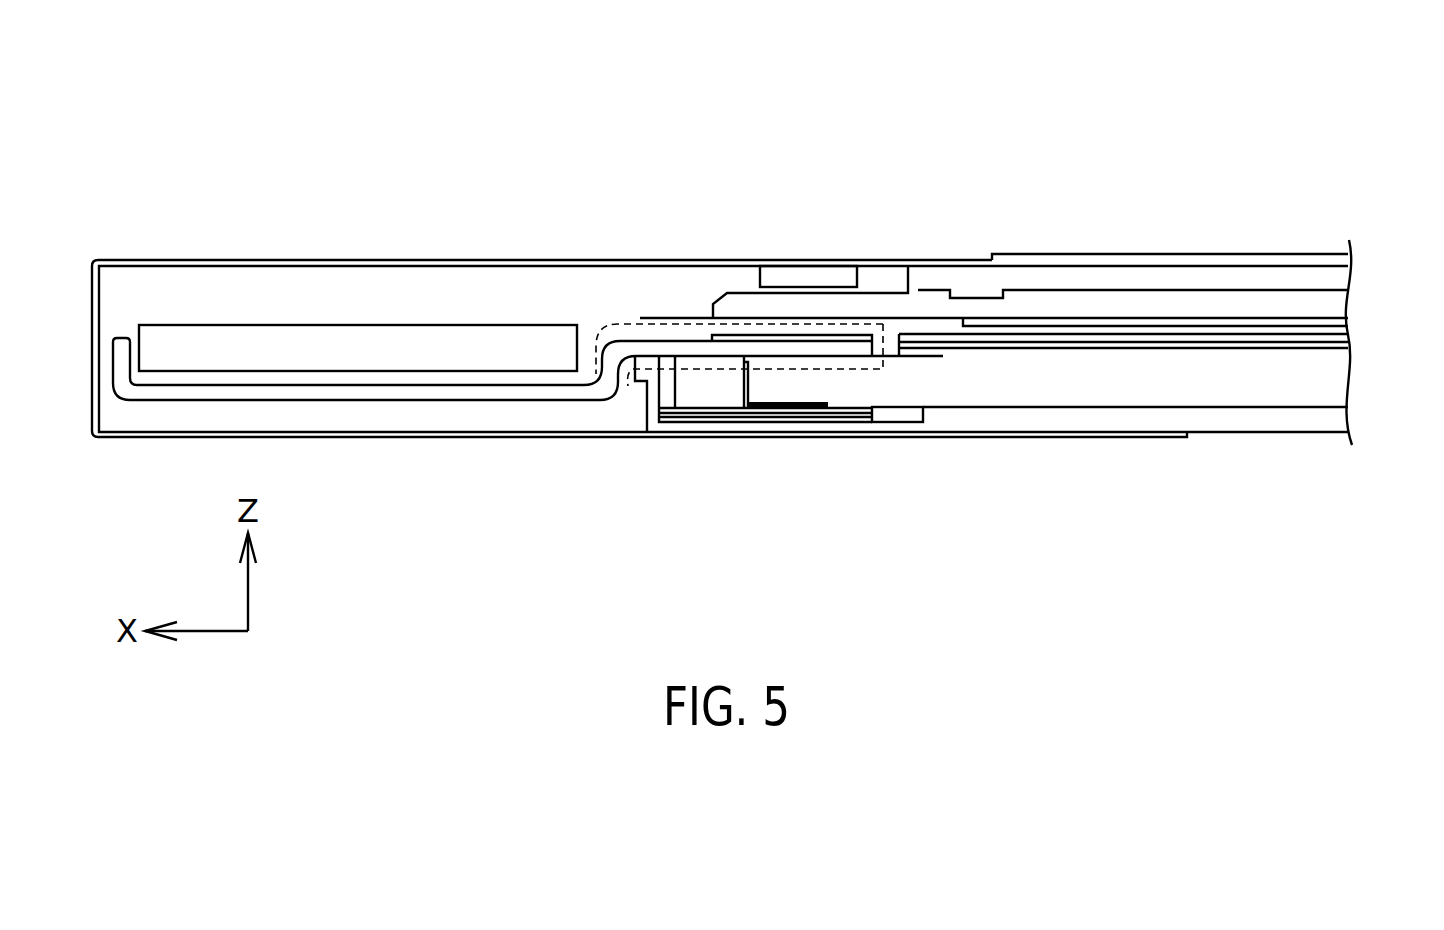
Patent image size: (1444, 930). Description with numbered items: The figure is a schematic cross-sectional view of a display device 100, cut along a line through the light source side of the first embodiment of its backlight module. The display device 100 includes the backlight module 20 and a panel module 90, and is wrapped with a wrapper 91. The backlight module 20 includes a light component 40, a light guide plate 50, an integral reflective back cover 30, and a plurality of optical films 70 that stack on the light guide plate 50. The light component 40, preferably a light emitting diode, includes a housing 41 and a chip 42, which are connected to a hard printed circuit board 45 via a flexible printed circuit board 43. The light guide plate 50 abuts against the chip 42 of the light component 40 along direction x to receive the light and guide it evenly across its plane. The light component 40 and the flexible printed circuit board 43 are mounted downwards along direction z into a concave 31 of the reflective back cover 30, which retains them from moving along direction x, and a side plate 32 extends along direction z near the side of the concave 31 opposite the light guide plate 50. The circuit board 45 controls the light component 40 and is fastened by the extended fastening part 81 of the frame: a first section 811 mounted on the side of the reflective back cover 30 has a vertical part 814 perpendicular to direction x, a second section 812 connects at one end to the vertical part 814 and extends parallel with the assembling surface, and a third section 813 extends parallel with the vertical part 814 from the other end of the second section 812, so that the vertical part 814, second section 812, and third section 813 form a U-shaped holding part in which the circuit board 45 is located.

The display device 100 is at (1192, 133).
The backlight module 20 is at (1302, 443).
The reflective back cover 30 is at (1018, 423).
The concave 31 is at (909, 488).
The side plate 32 is at (651, 396).
The light component 40 is at (652, 492).
The housing 41 is at (693, 398).
The chip 42 is at (745, 402).
The circuit board 43 is at (822, 418).
The circuit board 45 is at (352, 345).
The light guide plate 50 is at (1177, 370).
The optical films 70 is at (1320, 342).
The fastening part 81 is at (158, 113).
The first section 811 is at (682, 324).
The second section 812 is at (448, 392).
The third section 813 is at (121, 357).
The vertical part 814 is at (611, 372).
The panel module 90 is at (898, 311).
The wrapper 91 is at (830, 266).